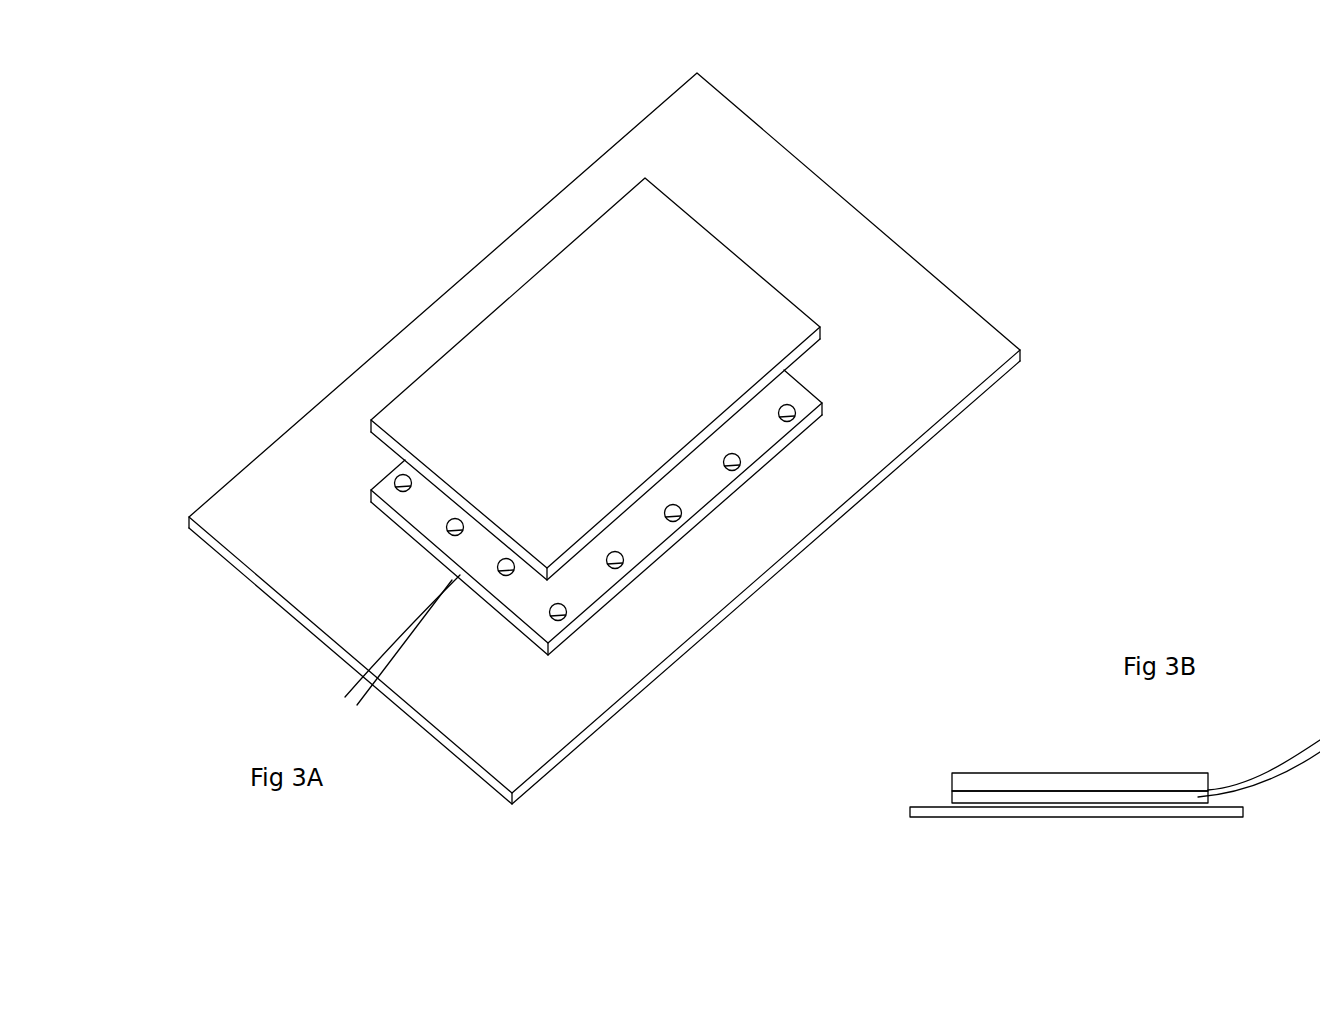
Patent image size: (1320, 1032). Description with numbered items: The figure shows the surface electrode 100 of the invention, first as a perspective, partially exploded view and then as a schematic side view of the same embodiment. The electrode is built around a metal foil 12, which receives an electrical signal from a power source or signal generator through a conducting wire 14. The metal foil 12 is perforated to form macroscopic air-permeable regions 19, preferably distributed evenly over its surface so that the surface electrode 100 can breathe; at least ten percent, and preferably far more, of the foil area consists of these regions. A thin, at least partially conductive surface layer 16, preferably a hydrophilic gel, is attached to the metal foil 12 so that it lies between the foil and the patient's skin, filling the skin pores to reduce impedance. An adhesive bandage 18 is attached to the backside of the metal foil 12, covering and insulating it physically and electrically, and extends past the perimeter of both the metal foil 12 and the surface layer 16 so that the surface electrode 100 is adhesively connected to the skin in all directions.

In FIG. 3A, the surface electrode 100 is at (599, 434).
In FIG. 3A, the metal foil 12 is at (380, 487).
In FIG. 3B, the metal foil 12 is at (960, 803).
In FIG. 3A, the conducting wire 14 is at (400, 638).
In FIG. 3A, the surface layer 16 is at (493, 347).
In FIG. 3B, the surface layer 16 is at (952, 778).
In FIG. 3A, the adhesive bandage 18 is at (252, 508).
In FIG. 3B, the adhesive bandage 18 is at (950, 812).
In FIG. 3A, the macroscopic air-permeable regions 19 is at (673, 513).